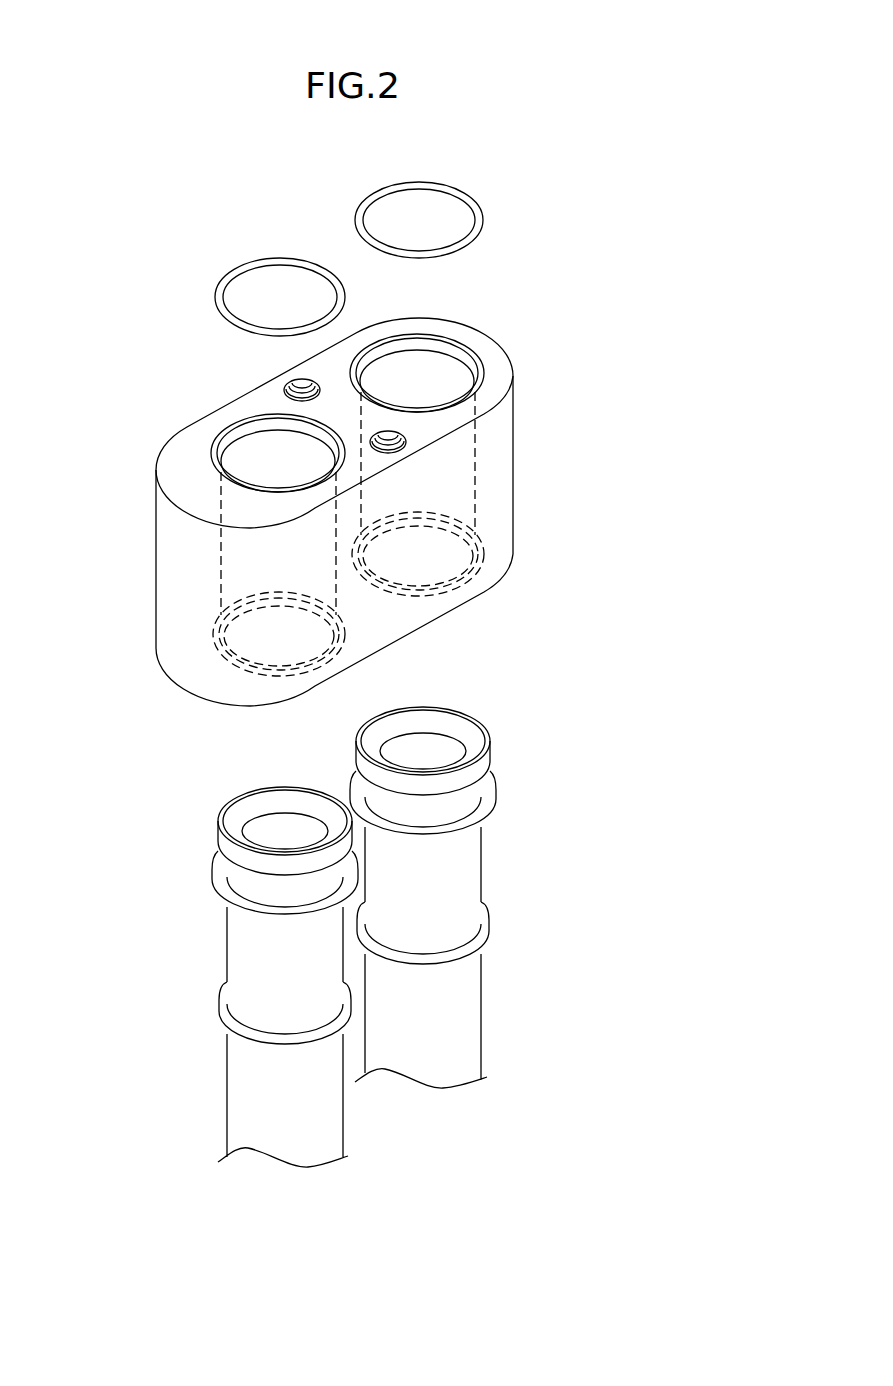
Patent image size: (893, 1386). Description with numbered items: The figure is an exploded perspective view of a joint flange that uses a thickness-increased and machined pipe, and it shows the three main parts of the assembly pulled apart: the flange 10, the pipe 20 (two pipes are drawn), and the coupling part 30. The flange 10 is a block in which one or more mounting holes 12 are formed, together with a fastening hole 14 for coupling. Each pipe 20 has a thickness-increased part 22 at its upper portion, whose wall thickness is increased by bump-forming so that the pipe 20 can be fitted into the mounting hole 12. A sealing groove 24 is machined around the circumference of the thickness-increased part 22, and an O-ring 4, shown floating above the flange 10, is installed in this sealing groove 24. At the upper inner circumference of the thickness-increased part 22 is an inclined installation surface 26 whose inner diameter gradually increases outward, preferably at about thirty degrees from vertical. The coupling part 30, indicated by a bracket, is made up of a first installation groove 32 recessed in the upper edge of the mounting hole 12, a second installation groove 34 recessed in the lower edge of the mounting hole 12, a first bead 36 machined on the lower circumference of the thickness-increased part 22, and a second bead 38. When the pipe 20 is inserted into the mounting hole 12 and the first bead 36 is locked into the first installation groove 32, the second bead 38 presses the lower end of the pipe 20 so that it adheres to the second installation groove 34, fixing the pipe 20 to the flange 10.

The O-ring 4 is at (357, 222).
The flange 10 is at (497, 497).
The mounting hole 12 is at (307, 450).
The fastening hole 14 is at (386, 436).
The pipe 20 is at (461, 991).
The thickness-increased part 22 is at (477, 813).
The sealing groove 24 is at (477, 787).
The inclined installation surface 26 is at (455, 734).
The coupling part 30 is at (82, 582).
The first installation groove 32 is at (157, 548).
The second installation groove 34 is at (228, 667).
The first bead 36 is at (213, 880).
The second bead 38 is at (220, 997).